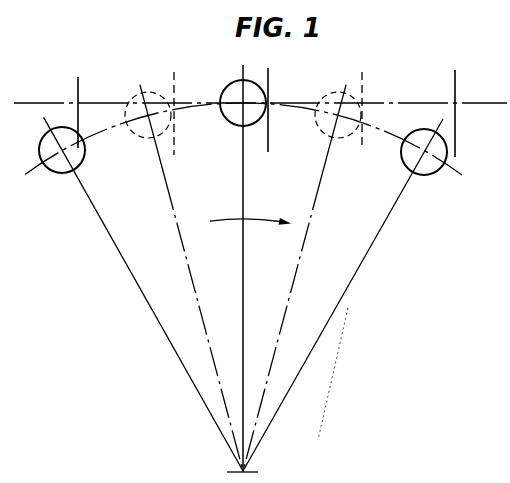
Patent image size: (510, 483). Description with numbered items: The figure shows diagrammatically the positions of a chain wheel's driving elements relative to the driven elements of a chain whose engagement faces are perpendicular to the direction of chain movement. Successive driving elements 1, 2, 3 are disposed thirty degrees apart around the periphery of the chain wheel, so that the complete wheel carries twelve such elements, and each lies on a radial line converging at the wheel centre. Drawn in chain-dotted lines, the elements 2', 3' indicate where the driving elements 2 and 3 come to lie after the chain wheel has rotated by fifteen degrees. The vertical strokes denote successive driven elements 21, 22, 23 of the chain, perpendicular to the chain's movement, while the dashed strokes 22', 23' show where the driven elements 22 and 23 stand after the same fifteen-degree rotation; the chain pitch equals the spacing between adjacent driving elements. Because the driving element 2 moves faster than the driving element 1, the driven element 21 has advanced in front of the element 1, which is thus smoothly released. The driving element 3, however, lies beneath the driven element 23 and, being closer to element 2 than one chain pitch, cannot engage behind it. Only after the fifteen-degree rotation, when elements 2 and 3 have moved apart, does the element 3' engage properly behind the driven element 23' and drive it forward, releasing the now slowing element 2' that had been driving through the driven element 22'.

The driving element 1 is at (405, 165).
The driving element 2 is at (241, 268).
The driving element 3 is at (141, 294).
The driving element (rotated position) 2' is at (302, 278).
The driving element (rotated position) 3' is at (184, 278).
The driven element 21 is at (456, 72).
The driven element 22 is at (286, 106).
The driven element 23 is at (95, 107).
The driven element (rotated position) 22' is at (382, 105).
The driven element (rotated position) 23' is at (194, 108).